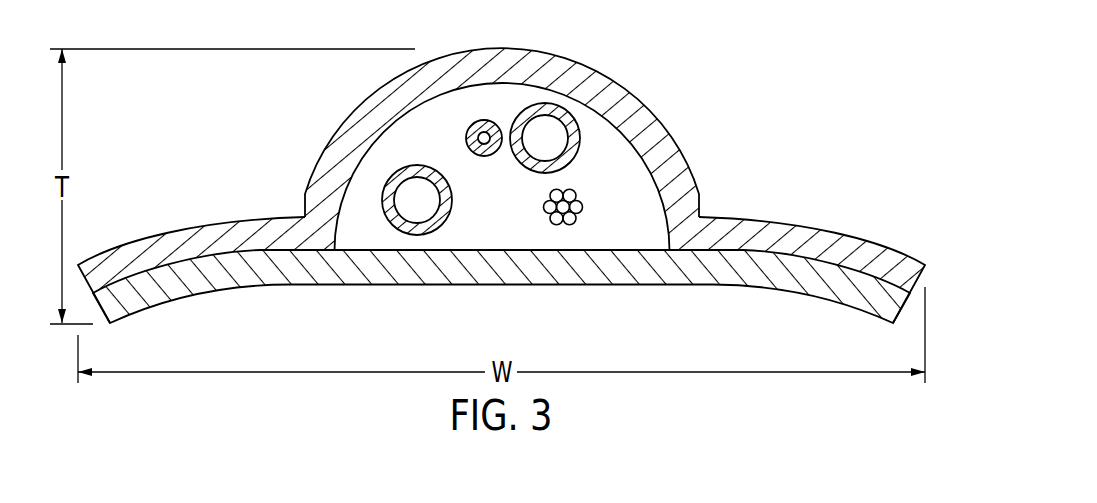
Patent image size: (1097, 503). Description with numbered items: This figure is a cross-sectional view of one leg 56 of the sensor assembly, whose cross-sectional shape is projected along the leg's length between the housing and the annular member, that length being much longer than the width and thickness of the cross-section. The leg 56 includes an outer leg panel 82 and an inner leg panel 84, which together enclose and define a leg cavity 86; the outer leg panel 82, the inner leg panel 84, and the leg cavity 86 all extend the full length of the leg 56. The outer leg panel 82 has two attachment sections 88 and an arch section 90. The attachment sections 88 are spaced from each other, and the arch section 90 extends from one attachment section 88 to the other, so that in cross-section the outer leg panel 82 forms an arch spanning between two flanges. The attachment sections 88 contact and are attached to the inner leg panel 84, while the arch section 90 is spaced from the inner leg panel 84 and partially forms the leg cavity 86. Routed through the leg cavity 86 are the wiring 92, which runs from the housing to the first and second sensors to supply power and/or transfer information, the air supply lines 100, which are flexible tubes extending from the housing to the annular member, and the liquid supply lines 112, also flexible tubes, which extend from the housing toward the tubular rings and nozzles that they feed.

The leg 56 is at (785, 96).
The outer leg panel 82 is at (635, 97).
The inner leg panel 84 is at (560, 285).
The leg cavity 86 is at (632, 217).
The attachment sections 88 is at (155, 232).
The arch section 90 is at (358, 106).
The wiring 92 is at (580, 196).
The air supply lines 100 is at (484, 120).
The liquid supply lines 112 is at (546, 103).